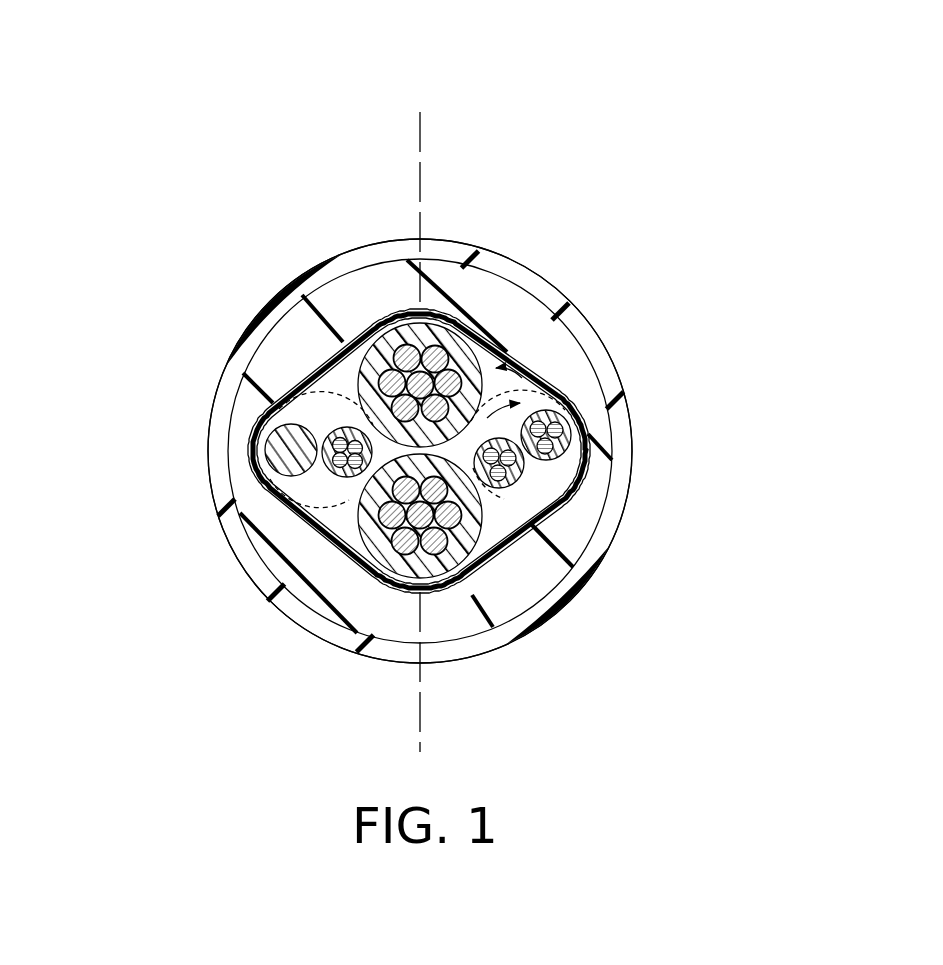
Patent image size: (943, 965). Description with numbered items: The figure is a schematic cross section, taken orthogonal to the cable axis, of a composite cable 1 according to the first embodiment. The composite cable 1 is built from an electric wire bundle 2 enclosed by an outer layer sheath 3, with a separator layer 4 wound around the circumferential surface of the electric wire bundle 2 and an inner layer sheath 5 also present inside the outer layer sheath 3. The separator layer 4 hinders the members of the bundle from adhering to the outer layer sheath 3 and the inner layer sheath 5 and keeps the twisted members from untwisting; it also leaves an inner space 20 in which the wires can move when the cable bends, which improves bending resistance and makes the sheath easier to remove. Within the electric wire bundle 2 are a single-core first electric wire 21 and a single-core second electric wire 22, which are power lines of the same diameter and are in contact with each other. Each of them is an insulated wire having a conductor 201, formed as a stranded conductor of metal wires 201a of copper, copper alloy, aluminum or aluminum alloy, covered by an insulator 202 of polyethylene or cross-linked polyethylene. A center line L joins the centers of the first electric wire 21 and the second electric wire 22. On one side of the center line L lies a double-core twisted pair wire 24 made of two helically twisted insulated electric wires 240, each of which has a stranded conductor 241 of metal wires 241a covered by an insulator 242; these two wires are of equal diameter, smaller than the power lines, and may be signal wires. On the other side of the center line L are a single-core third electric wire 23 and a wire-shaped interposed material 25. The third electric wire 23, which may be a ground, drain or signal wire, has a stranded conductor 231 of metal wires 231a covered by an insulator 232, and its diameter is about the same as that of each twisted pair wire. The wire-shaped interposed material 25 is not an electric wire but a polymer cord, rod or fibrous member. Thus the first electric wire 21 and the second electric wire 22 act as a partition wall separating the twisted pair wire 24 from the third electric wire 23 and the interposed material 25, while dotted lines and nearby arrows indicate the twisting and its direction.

The composite cable 1 is at (252, 143).
The center line L is at (420, 148).
The electric wire bundle 2 is at (547, 372).
The outer layer sheath 3 is at (213, 468).
The separator layer 4 is at (458, 605).
The inner layer sheath 5 is at (257, 513).
The inner space 20 is at (336, 522).
The first electric wire 21 is at (525, 291).
The second electric wire 22 is at (469, 582).
The conductor 201 is at (445, 318).
The metal wires 201a is at (455, 278).
The insulator 202 is at (491, 349).
The third electric wire 23 is at (226, 416).
The conductor 231 is at (348, 425).
The metal wires 231a is at (325, 442).
The insulator 232 is at (288, 426).
The twisted pair wire 24 is at (620, 481).
The insulated electric wires 240 is at (620, 437).
The conductor 241 is at (643, 395).
The metal wires 241a is at (583, 455).
The insulator 242 is at (573, 440).
The wire-shaped interposed material 25 is at (226, 325).